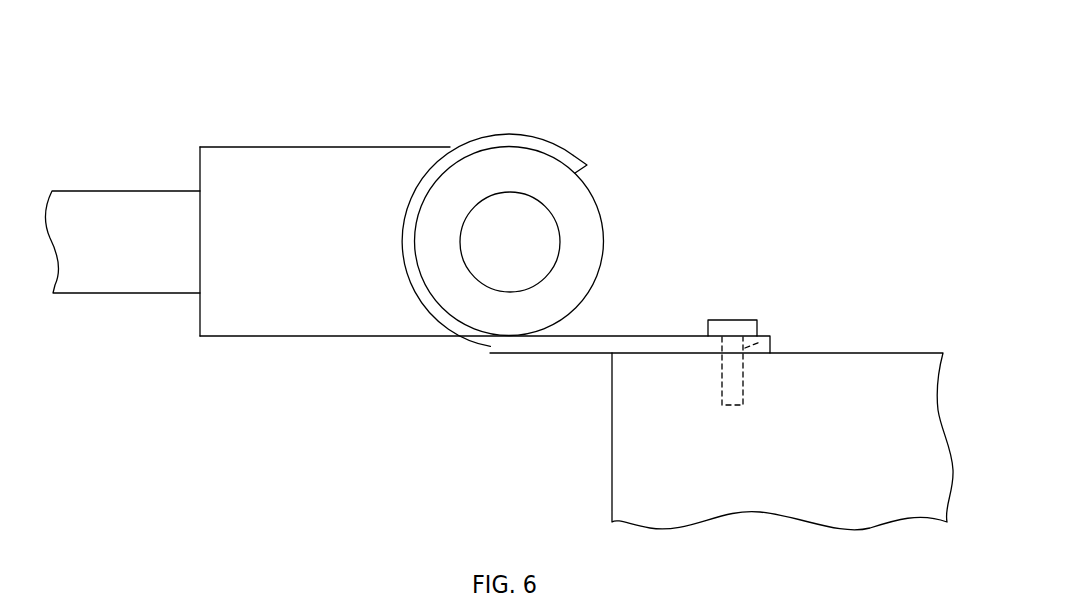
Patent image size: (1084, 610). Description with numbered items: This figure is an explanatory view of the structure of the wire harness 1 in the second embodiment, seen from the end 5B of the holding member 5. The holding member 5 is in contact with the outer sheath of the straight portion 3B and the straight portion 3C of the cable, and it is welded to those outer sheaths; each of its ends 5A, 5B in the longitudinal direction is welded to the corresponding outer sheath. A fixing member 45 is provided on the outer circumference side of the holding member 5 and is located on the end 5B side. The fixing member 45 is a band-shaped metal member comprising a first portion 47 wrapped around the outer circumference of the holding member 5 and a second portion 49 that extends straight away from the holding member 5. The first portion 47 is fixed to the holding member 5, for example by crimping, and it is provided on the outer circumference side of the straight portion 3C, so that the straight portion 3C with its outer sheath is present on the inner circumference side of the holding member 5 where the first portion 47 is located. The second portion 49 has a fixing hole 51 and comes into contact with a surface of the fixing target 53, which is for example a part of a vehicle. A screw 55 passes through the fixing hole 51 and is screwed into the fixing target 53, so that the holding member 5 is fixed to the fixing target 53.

The wire harness 1 is at (305, 147).
The straight portion 3B is at (114, 293).
The straight portion 3C is at (510, 292).
The holding member 5 is at (333, 318).
The end 5A is at (241, 167).
The end 5B is at (517, 160).
The fixing member 45 is at (572, 160).
The first portion 47 is at (488, 142).
The second portion 49 is at (672, 343).
The fixing hole 51 is at (768, 337).
The fixing target 53 is at (908, 372).
The screw 55 is at (722, 330).